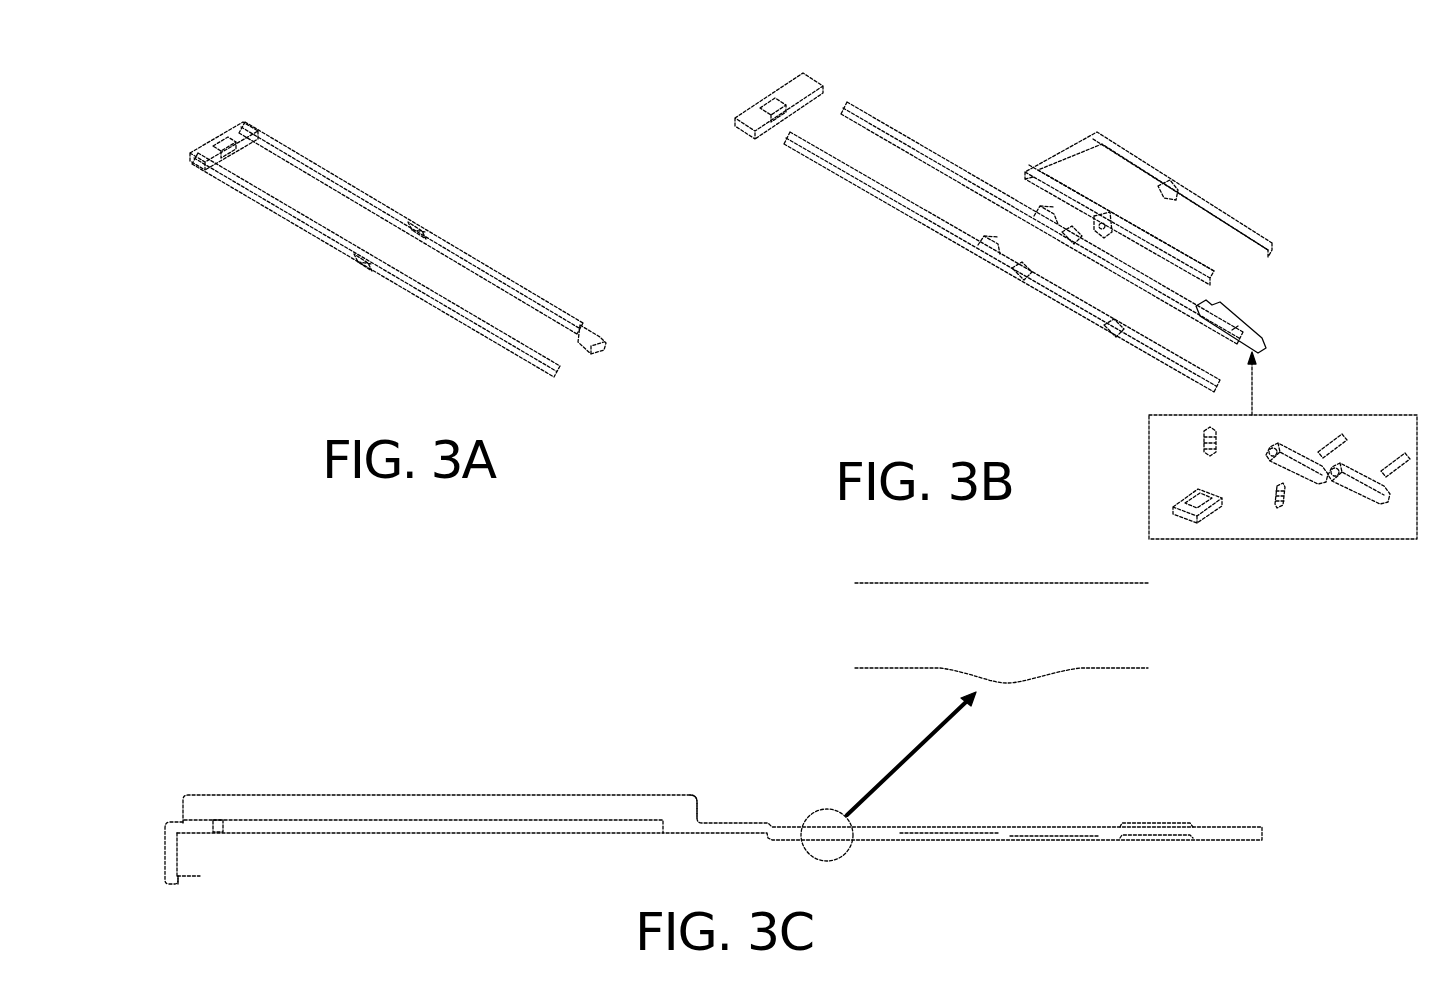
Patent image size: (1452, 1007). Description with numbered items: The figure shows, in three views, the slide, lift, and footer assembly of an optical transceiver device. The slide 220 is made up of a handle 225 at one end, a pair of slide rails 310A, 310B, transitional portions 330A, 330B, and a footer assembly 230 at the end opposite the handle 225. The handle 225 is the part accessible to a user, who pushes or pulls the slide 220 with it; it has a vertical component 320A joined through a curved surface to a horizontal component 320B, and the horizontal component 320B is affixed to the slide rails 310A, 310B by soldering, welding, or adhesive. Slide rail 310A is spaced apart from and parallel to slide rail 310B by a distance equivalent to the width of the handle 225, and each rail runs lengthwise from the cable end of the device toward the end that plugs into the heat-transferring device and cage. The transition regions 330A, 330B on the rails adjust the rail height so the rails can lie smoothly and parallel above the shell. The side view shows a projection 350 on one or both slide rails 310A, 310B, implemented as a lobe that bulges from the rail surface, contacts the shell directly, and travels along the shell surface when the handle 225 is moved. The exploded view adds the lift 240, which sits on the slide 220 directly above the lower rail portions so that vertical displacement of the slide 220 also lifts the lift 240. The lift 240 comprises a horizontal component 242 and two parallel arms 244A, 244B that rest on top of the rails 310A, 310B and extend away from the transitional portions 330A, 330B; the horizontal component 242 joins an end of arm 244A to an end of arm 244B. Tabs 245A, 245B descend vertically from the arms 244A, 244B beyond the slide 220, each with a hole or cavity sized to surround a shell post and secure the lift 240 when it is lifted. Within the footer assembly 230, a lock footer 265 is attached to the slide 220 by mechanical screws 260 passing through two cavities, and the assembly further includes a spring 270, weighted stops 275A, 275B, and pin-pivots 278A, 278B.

In FIG. 3A, the slide 220 is at (458, 84).
In FIG. 3B, the slide 220 is at (1057, 323).
In FIG. 3A, the handle 225 is at (208, 150).
In FIG. 3B, the handle 225 is at (750, 110).
In FIG. 3C, the handle 225 is at (168, 830).
In FIG. 3A, the footer assembly 230 is at (587, 332).
In FIG. 3B, the footer assembly 230 is at (1155, 412).
In FIG. 3B, the lift 240 is at (1244, 86).
In FIG. 3B, the horizontal component 242 is at (1058, 150).
In FIG. 3B, the arm 244A is at (1082, 197).
In FIG. 3B, the arm 244B is at (1145, 173).
In FIG. 3B, the tab 245A is at (1107, 220).
In FIG. 3B, the tab 245B is at (1170, 188).
In FIG. 3B, the mechanical screws 260 is at (1203, 433).
In FIG. 3B, the lock footer 265 is at (1177, 517).
In FIG. 3B, the spring 270 is at (1278, 500).
In FIG. 3B, the weighted stop 275A is at (1303, 470).
In FIG. 3B, the weighted stop 275B is at (1347, 483).
In FIG. 3B, the pin-pivot 278A is at (1340, 438).
In FIG. 3B, the pin-pivot 278B is at (1391, 455).
In FIG. 3A, the slide rail 310A is at (280, 202).
In FIG. 3B, the slide rail 310A is at (920, 212).
In FIG. 3A, the slide rail 310B is at (360, 188).
In FIG. 3B, the slide rail 310B is at (858, 102).
In FIG. 3C, the vertical component 320A is at (200, 876).
In FIG. 3C, the horizontal component 320B is at (235, 830).
In FIG. 3A, the transition region 330A is at (357, 252).
In FIG. 3A, the transition region 330B is at (412, 220).
In FIG. 3C, the projection 350 is at (835, 853).